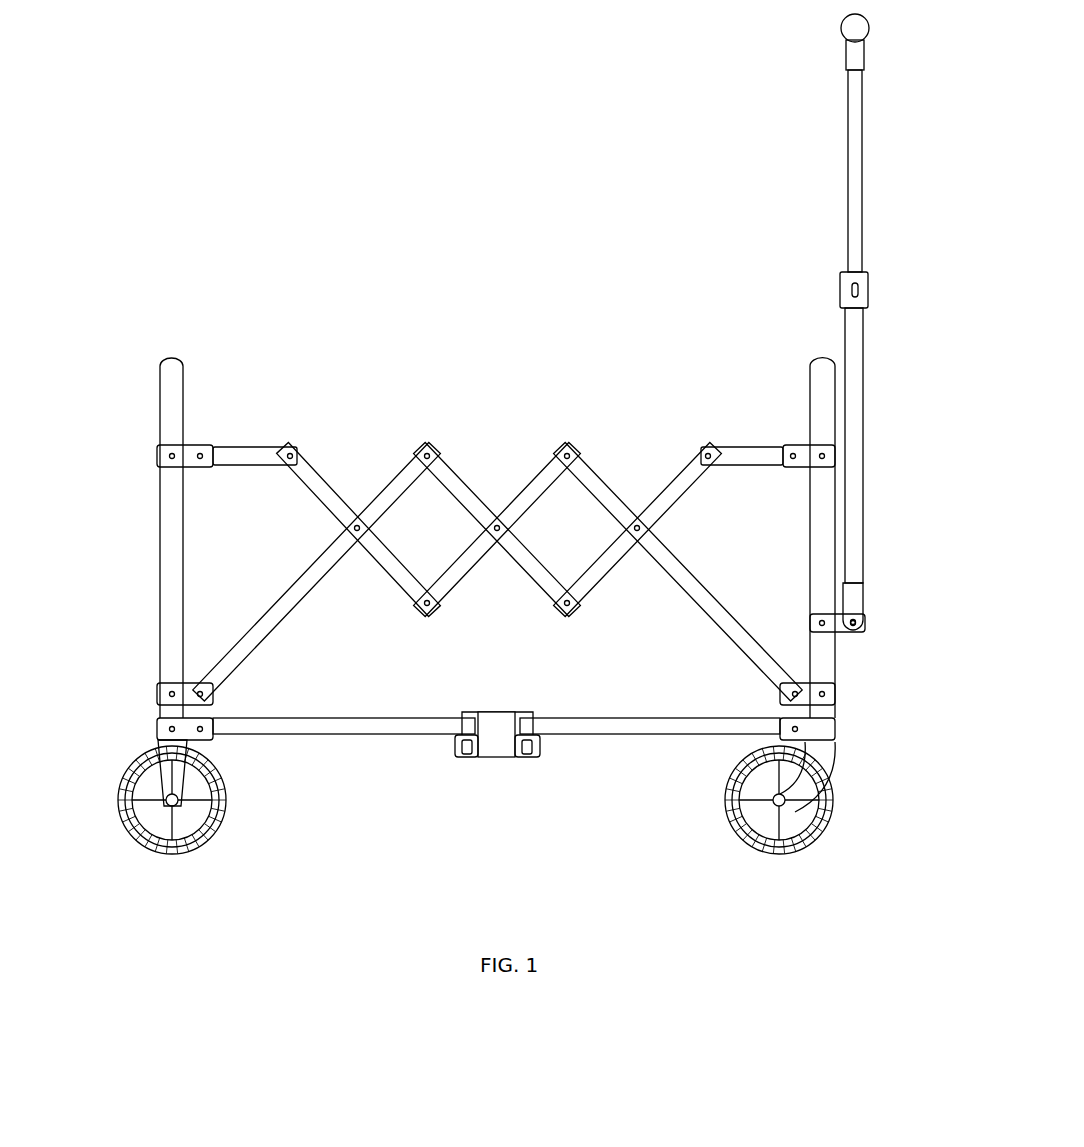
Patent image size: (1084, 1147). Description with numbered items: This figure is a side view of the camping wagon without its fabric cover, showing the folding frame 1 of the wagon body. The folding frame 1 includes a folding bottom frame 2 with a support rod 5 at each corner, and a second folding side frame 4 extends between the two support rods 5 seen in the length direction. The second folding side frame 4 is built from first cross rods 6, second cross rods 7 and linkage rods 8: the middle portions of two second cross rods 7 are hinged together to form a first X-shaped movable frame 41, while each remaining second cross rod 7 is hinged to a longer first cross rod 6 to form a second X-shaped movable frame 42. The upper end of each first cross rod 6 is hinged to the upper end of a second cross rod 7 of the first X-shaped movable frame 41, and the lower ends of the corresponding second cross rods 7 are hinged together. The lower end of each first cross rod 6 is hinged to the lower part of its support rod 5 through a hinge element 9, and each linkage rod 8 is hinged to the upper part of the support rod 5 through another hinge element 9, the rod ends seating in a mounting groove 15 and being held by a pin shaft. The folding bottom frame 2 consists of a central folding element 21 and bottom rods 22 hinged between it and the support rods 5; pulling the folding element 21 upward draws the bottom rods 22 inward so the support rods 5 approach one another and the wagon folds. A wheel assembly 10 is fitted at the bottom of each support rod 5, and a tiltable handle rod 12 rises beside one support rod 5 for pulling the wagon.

The folding frame 1 is at (688, 586).
The folding bottom frame 2 is at (345, 735).
The second folding side frame 4 is at (716, 440).
The first X-shaped movable frame 41 is at (520, 497).
The second X-shaped movable frame 42 is at (327, 563).
The support rod 5 is at (120, 538).
The first cross rod 6 is at (269, 618).
The second cross rod 7 is at (320, 487).
The linkage rod 8 is at (247, 456).
The hinge element 9 is at (128, 562).
The wheel assembly 10 is at (802, 810).
The handle rod 12 is at (852, 332).
The mounting groove 15 is at (903, 606).
The folding element 21 is at (497, 740).
The bottom rod 22 is at (572, 732).